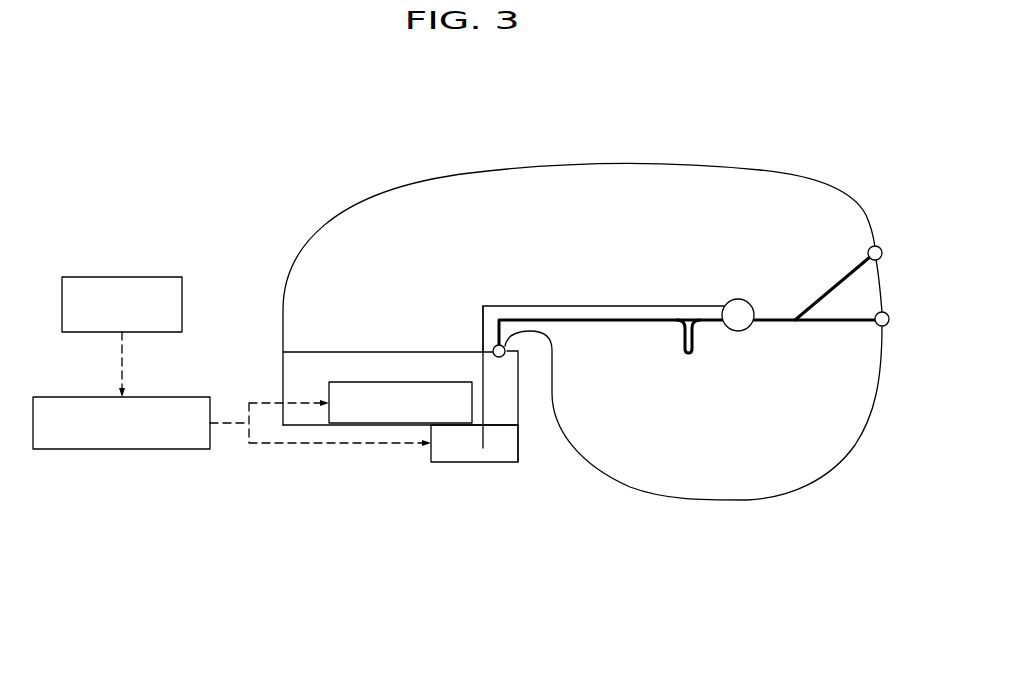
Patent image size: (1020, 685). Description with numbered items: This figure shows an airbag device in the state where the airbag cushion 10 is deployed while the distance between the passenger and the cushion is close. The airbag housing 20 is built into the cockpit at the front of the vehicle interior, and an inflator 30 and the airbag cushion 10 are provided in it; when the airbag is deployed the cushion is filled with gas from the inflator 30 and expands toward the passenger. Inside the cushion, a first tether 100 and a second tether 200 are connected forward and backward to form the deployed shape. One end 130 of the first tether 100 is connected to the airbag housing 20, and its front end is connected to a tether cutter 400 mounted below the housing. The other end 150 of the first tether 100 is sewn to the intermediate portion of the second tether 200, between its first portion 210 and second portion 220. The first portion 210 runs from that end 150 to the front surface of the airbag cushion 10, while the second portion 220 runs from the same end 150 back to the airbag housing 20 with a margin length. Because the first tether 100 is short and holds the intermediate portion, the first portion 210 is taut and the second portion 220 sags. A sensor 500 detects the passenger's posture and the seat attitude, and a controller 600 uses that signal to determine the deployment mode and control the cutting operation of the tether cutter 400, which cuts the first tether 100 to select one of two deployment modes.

The airbag cushion 10 is at (487, 167).
The airbag housing 20 is at (502, 427).
The inflator 30 is at (347, 382).
The first tether 100 is at (640, 306).
The one end of the first tether 130 is at (483, 426).
The other end of the first tether 150 is at (722, 300).
The second tether 200 is at (788, 590).
The first portion of the second tether 210 is at (828, 295).
The second portion of the second tether 220 is at (623, 321).
The tether cutter 400 is at (439, 457).
The sensor 500 is at (108, 277).
The controller 600 is at (145, 450).